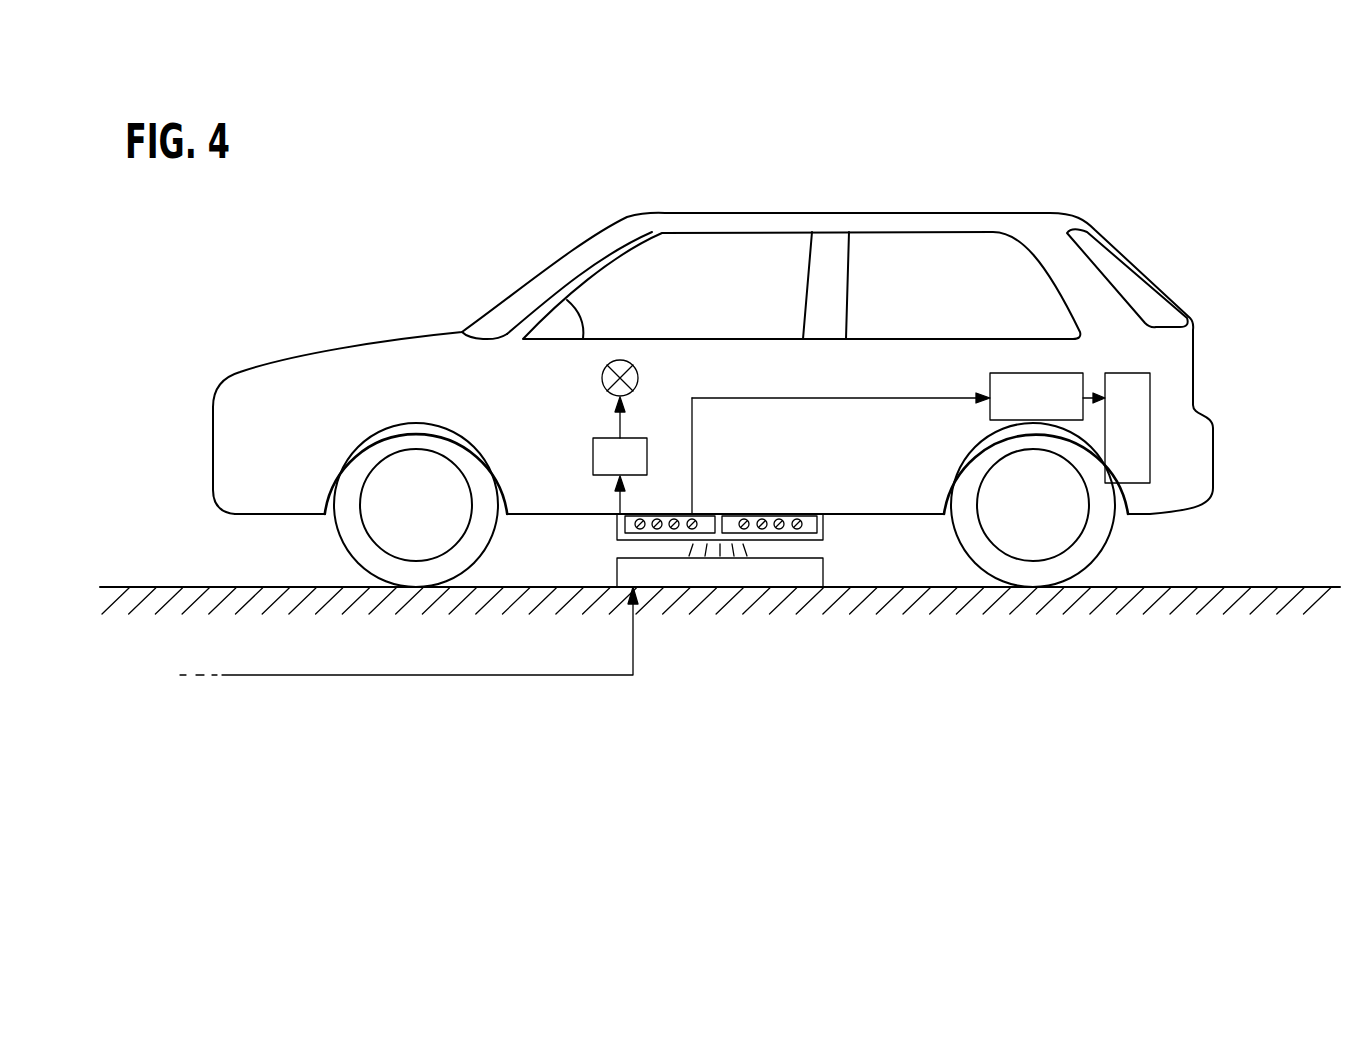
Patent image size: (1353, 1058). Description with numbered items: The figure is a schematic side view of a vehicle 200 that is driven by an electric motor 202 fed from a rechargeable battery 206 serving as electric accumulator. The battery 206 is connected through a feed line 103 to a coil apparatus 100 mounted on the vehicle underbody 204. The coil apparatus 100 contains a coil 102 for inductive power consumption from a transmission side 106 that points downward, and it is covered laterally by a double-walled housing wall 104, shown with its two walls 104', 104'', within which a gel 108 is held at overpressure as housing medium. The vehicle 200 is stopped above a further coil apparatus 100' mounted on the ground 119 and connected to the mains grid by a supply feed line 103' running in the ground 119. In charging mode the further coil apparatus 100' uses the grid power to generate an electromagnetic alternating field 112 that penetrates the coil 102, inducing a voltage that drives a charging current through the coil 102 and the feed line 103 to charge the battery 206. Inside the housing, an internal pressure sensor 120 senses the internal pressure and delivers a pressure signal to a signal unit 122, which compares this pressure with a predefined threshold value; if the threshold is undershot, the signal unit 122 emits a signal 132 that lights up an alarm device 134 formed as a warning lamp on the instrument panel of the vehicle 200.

The vehicle 200 is at (1150, 247).
The electric motor 202 is at (1152, 390).
The vehicle underbody 204 is at (938, 514).
The rechargeable battery 206 is at (1000, 373).
The coil apparatus 100 is at (771, 430).
The further coil apparatus 100' is at (755, 615).
The coil 102 is at (736, 473).
The feed line 103 is at (841, 339).
The supply feed line 103' is at (409, 670).
The housing wall 104 is at (736, 473).
The first coil part 104' is at (701, 470).
The second coil part 104'' is at (769, 493).
The transmission side 106 is at (610, 548).
The gel 108 is at (737, 549).
The electromagnetic alternating field 112 is at (748, 547).
The ground 119 is at (1290, 587).
The internal pressure sensor 120 is at (616, 518).
The signal unit 122 is at (593, 455).
The signal 132 is at (622, 420).
The alarm device 134 is at (603, 380).